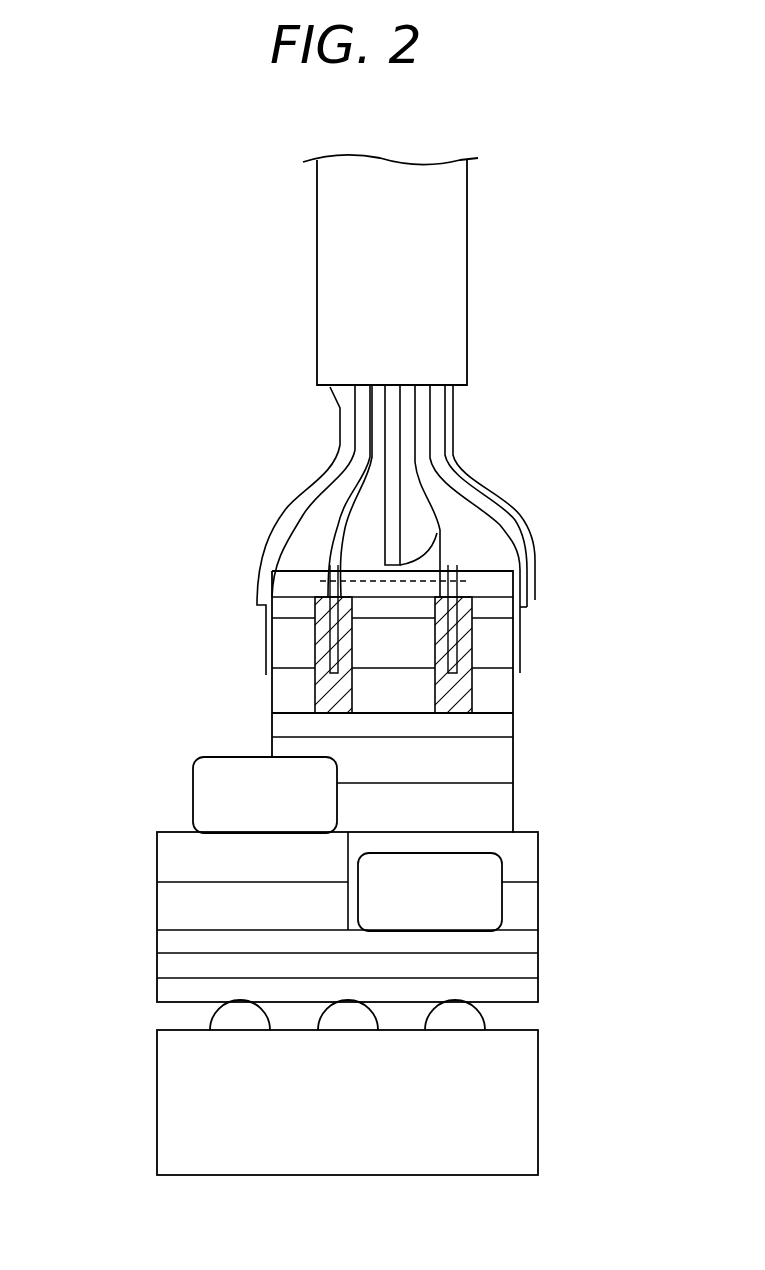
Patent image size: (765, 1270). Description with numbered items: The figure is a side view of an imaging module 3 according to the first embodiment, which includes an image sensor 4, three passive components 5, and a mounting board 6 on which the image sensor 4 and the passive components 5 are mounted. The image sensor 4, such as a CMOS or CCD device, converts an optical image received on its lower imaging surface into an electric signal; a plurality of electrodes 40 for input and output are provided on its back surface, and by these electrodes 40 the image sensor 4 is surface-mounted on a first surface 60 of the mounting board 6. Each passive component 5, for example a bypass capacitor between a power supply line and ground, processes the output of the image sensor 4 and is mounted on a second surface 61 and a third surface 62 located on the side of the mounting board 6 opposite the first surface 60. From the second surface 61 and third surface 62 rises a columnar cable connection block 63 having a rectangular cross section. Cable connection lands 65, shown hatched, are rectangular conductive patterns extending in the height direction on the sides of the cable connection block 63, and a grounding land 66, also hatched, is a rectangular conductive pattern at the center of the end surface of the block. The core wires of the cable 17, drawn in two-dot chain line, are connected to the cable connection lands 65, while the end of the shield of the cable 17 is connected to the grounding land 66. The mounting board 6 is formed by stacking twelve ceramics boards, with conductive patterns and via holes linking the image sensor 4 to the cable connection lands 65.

The cable 17 is at (467, 257).
The grounding land 66 is at (458, 566).
The cable connection land 65 is at (312, 652).
The cable connection block 63 is at (515, 693).
The mounting board 6 is at (535, 758).
The imaging module 3 is at (71, 606).
The passive component 5 is at (232, 757).
The third surface 62 is at (177, 830).
The second surface 61 is at (517, 930).
The first surface 60 is at (175, 1003).
The electrode 40 is at (200, 1015).
The image sensor 4 is at (525, 1103).